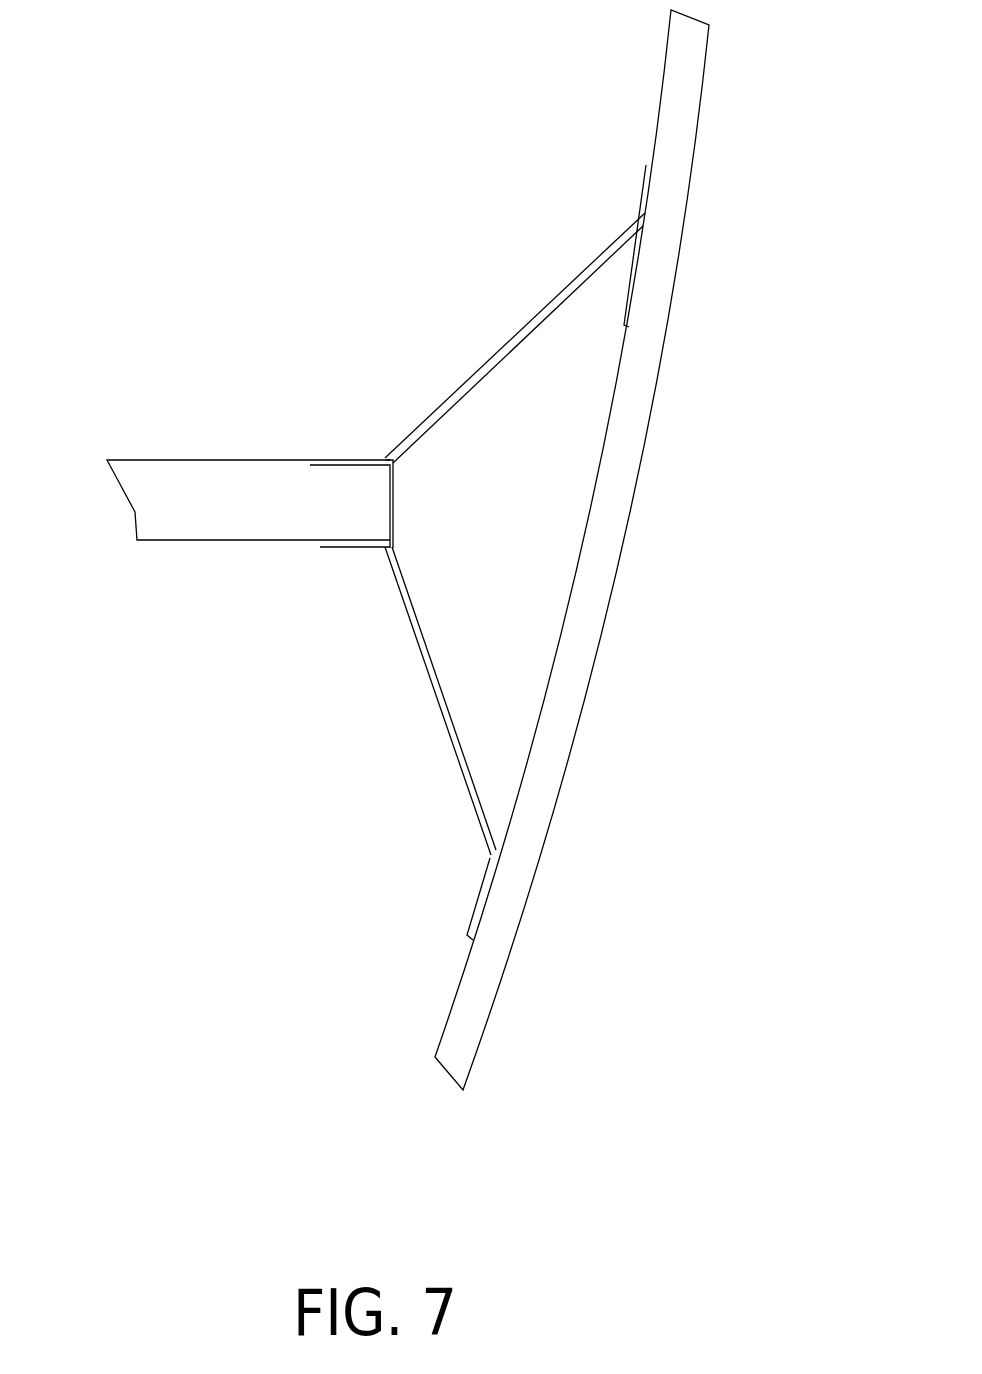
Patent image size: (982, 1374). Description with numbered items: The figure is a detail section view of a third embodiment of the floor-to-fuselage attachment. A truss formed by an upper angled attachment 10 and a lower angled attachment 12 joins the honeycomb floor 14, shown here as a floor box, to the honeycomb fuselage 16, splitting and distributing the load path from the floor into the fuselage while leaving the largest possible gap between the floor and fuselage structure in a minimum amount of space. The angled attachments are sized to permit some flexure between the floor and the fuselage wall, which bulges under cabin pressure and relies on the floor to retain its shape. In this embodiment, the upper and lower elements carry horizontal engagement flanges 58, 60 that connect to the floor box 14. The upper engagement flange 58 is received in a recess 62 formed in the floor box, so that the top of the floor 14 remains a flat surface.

The upper angled attachment 10 is at (481, 378).
The lower angled attachment 12 is at (423, 672).
The honeycomb floor 14 is at (172, 478).
The honeycomb fuselage 16 is at (577, 705).
The horizontal engagement flange 58 is at (345, 465).
The horizontal engagement flange 60 is at (358, 550).
The recess 62 is at (340, 465).